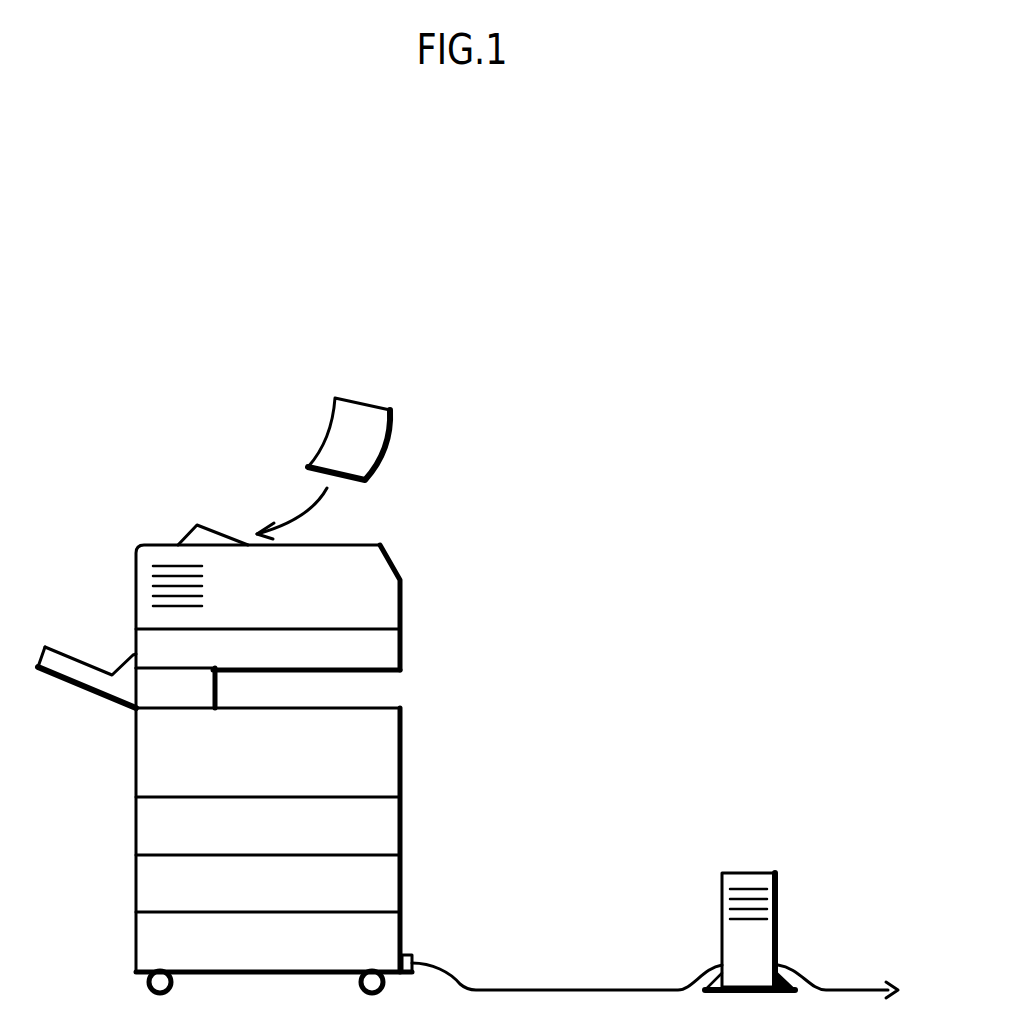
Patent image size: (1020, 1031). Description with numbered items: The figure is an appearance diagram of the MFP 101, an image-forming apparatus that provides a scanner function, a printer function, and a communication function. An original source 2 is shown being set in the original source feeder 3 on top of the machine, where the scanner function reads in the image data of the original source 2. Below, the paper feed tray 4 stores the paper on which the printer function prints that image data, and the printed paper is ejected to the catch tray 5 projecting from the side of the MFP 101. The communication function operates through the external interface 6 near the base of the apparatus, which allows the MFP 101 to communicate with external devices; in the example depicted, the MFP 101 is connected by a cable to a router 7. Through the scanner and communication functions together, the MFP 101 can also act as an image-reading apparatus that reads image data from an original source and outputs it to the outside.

The MFP 101 is at (474, 612).
The original source 2 is at (390, 443).
The original source feeder 3 is at (250, 545).
The paper feed tray 4 is at (387, 835).
The catch tray 5 is at (80, 668).
The external interface 6 is at (408, 957).
The router 7 is at (781, 880).